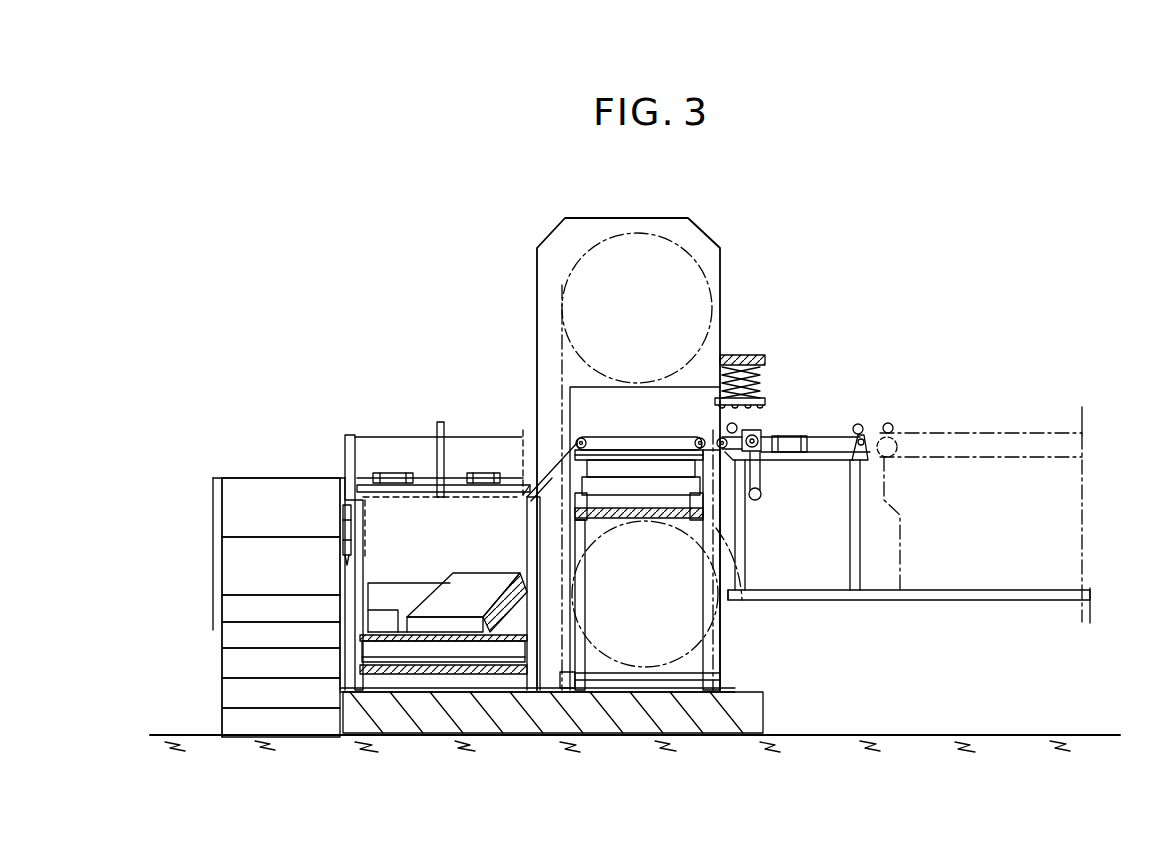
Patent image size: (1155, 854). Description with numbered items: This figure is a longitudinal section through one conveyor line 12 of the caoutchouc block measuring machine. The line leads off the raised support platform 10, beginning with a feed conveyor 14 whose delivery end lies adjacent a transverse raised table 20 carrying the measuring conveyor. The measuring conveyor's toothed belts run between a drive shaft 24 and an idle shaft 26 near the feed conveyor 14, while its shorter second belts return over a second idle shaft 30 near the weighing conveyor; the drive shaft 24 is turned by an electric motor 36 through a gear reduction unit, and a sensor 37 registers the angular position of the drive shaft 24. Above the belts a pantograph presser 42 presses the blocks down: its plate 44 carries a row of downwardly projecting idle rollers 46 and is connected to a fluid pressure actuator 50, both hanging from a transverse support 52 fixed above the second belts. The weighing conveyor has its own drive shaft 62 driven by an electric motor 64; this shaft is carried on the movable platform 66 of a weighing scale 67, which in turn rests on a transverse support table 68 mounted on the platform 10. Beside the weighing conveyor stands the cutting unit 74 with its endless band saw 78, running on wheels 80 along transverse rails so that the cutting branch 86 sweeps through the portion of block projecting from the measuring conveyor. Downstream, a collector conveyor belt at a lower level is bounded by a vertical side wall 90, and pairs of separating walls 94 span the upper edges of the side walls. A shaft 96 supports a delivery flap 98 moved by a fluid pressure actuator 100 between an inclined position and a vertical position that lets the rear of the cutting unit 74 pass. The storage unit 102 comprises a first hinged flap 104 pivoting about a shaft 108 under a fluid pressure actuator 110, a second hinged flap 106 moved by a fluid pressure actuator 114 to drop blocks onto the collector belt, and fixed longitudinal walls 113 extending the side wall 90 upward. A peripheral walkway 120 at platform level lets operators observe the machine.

The raised support platform 10 is at (950, 600).
The conveyor line 12 is at (1092, 405).
The feed conveyor 14 is at (995, 433).
The transverse raised table 20 is at (825, 455).
The drive shaft 24 is at (767, 460).
The idle shaft 26 is at (870, 430).
The second idle shaft 30 is at (722, 437).
The electric motor 36 is at (792, 448).
The sensor 37 is at (758, 500).
The pantograph presser 42 is at (777, 361).
The plate 44 is at (767, 399).
The idle rollers 46 is at (755, 407).
The fluid pressure actuator 50 is at (770, 378).
The transverse support 52 is at (745, 355).
The drive shaft 62 is at (567, 437).
The electric motor 64 is at (665, 440).
The movable platform 66 is at (648, 467).
The weighing scale 67 is at (667, 495).
The transverse support table 68 is at (617, 513).
The cutting unit 74 is at (552, 220).
The endless band saw 78 is at (598, 218).
The wheels 80 is at (517, 548).
The cutting branch 86 is at (740, 605).
The vertical side wall 90 is at (281, 666).
The separating walls 94 is at (373, 450).
The shaft 96 is at (522, 492).
The delivery flap 98 is at (549, 480).
The fluid pressure actuator 100 is at (487, 473).
The storage unit 102 is at (434, 500).
The first hinged flap 104 is at (447, 437).
The second hinged flap 106 is at (412, 492).
The shaft 108 is at (441, 497).
The fluid pressure actuator 110 is at (397, 473).
The fixed longitudinal walls 113 is at (343, 452).
The fluid pressure actuator 114 is at (343, 530).
The peripheral walkway 120 is at (245, 595).